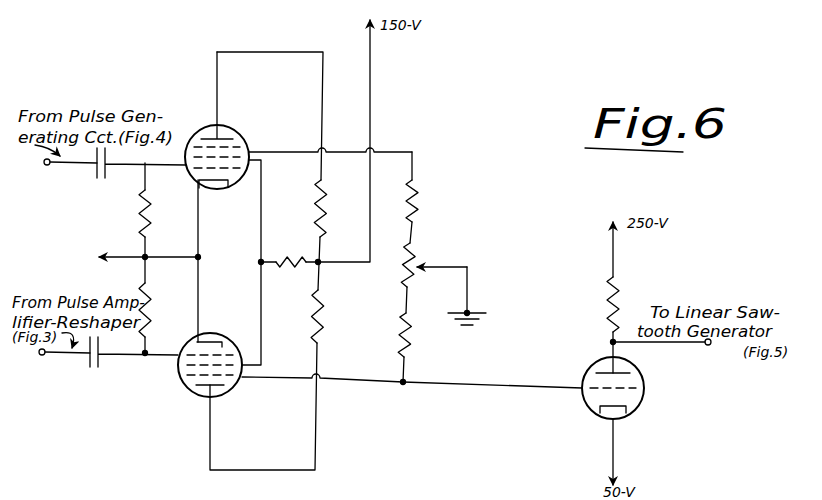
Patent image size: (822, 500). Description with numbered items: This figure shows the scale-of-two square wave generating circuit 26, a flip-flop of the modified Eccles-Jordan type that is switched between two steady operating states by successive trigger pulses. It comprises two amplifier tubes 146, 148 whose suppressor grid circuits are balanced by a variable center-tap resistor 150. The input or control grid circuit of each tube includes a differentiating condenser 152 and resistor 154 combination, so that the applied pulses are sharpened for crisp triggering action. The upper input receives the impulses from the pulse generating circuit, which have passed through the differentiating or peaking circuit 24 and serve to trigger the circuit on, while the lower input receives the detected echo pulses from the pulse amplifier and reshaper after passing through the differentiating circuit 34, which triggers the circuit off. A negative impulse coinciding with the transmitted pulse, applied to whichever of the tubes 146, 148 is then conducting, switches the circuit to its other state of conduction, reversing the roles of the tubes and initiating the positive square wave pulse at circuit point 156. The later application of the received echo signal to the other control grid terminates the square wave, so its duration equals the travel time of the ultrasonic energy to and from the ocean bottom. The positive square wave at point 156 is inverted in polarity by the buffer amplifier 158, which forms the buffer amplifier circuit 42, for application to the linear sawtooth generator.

The differentiating or peaking circuit 24 is at (96, 233).
The scale-of-two square wave generating circuit 26 is at (194, 245).
The differentiating circuit 34 is at (88, 284).
The buffer amplifier circuit 42 is at (600, 353).
The amplifier tube 146 is at (226, 127).
The amplifier tube 148 is at (215, 395).
The variable center-tap resistor 150 is at (403, 268).
The differentiating condenser 152 is at (92, 172).
The resistor 154 is at (138, 302).
The circuit point 156 is at (403, 386).
The buffer amplifier 158 is at (644, 402).